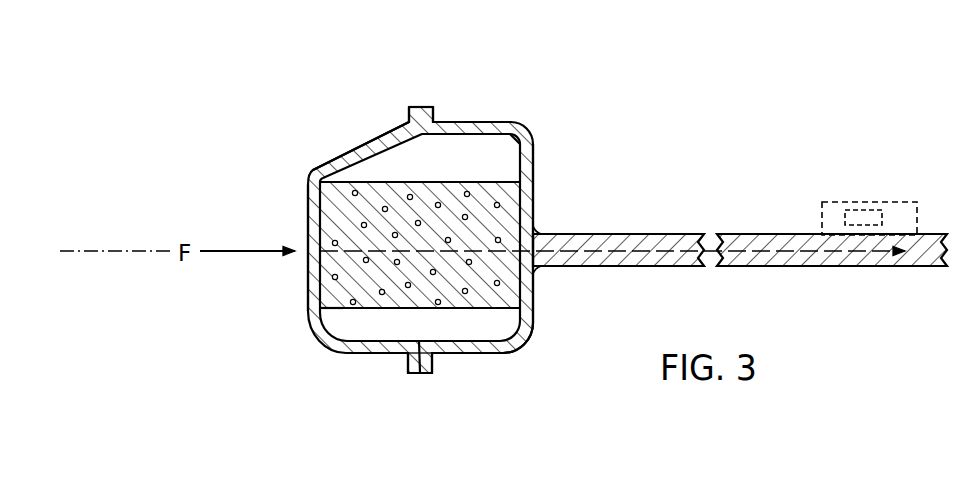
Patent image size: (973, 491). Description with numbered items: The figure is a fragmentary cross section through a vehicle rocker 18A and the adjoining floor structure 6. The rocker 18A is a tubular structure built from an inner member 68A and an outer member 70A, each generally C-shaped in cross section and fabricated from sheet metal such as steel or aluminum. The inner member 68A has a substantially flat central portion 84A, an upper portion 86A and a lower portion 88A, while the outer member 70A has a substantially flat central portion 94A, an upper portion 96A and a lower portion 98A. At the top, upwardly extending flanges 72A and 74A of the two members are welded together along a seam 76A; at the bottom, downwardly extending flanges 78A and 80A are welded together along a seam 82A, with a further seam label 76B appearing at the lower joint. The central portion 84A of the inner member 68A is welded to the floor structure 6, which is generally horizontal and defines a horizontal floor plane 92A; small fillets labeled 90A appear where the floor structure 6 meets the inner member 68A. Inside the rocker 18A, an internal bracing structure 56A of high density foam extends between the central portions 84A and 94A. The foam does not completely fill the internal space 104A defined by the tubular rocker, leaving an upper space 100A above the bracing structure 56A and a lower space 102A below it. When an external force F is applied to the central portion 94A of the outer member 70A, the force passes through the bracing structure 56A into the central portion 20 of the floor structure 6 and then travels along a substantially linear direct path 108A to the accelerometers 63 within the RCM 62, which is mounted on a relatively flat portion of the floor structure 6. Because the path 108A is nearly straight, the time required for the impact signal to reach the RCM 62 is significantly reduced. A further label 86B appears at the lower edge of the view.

The rocker 18A is at (473, 120).
The upper space 100A is at (358, 174).
The horizontal floor plane 92A is at (127, 250).
The central portion of floor structure 20 is at (670, 233).
The floor structure 6 is at (738, 233).
The RCM 62 is at (892, 202).
The accelerometers 63 is at (855, 210).
The direct path 108A is at (690, 267).
The fillet junction 90A is at (535, 230).
The upper portion 86A is at (487, 122).
The upwardly extending flange 72A is at (434, 121).
The seam 76A is at (423, 107).
The upwardly extending flange 74A is at (407, 118).
The upper portion 96A is at (350, 148).
The internal space 104A is at (495, 152).
The central portion 84A is at (533, 200).
The central portion 94A is at (307, 268).
The internal bracing structure 56A is at (368, 328).
The lower space 102A is at (343, 308).
The outer member 70A is at (358, 360).
The lower portion 98A is at (385, 353).
The downwardly extending flange 80A is at (406, 364).
The seam 82A is at (418, 373).
The seam 76B is at (441, 422).
The downwardly extending flange 78A is at (433, 363).
The inner member 68A is at (463, 358).
The lower portion 88A is at (500, 355).
The second top wall 86B is at (536, 490).